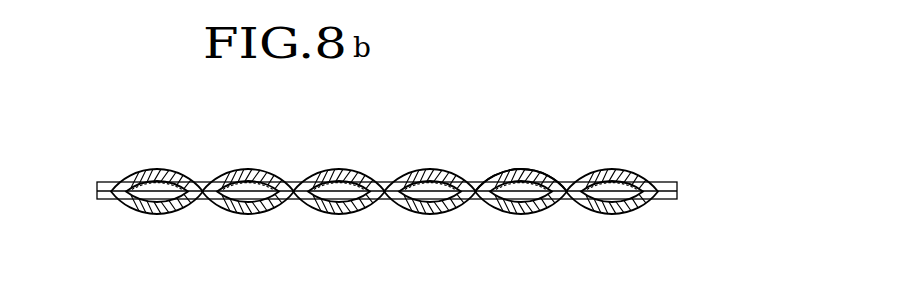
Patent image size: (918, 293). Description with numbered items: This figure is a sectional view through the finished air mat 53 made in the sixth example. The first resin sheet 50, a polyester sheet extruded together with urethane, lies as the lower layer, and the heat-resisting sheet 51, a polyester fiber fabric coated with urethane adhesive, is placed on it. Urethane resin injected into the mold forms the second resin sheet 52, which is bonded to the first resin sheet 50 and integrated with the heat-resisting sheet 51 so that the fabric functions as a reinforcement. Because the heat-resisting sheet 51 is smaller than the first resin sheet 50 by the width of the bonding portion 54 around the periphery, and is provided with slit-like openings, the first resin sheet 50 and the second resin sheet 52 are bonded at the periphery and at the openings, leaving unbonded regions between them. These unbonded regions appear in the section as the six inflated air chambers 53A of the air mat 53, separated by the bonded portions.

The first resin sheet 50 is at (523, 215).
The heat-resisting sheet 51 is at (432, 193).
The second resin sheet 52 is at (522, 170).
The air mat 53 is at (305, 155).
The air chamber 53A is at (155, 193).
The bonding portion 54 is at (113, 182).